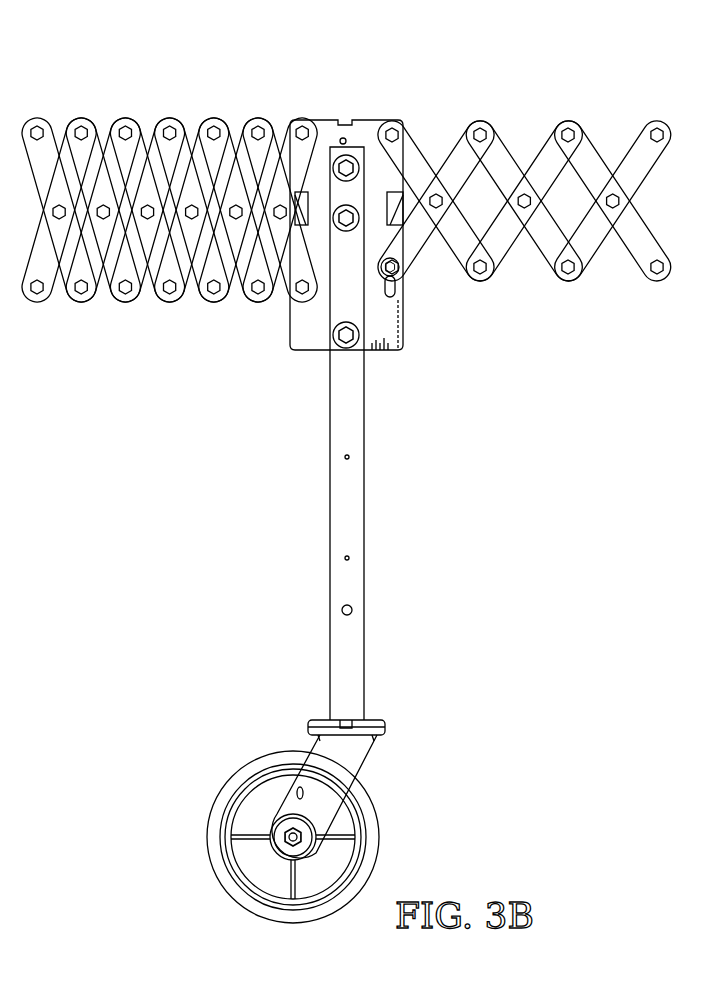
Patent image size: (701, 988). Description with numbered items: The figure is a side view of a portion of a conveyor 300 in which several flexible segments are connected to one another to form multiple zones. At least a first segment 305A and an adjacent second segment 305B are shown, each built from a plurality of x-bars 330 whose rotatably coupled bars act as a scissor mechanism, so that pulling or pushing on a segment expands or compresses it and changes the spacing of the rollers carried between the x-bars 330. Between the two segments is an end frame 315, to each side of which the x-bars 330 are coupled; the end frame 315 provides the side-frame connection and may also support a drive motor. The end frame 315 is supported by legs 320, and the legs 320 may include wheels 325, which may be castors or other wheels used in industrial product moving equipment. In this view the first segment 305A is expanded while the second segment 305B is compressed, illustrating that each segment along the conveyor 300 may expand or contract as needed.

The conveyor 300 is at (436, 72).
The first segment 305A is at (525, 100).
The second segment 305B is at (103, 100).
The end frame 315 is at (324, 125).
The legs 320 is at (330, 435).
The wheels 325 is at (206, 845).
The x-bars 330 is at (213, 108).